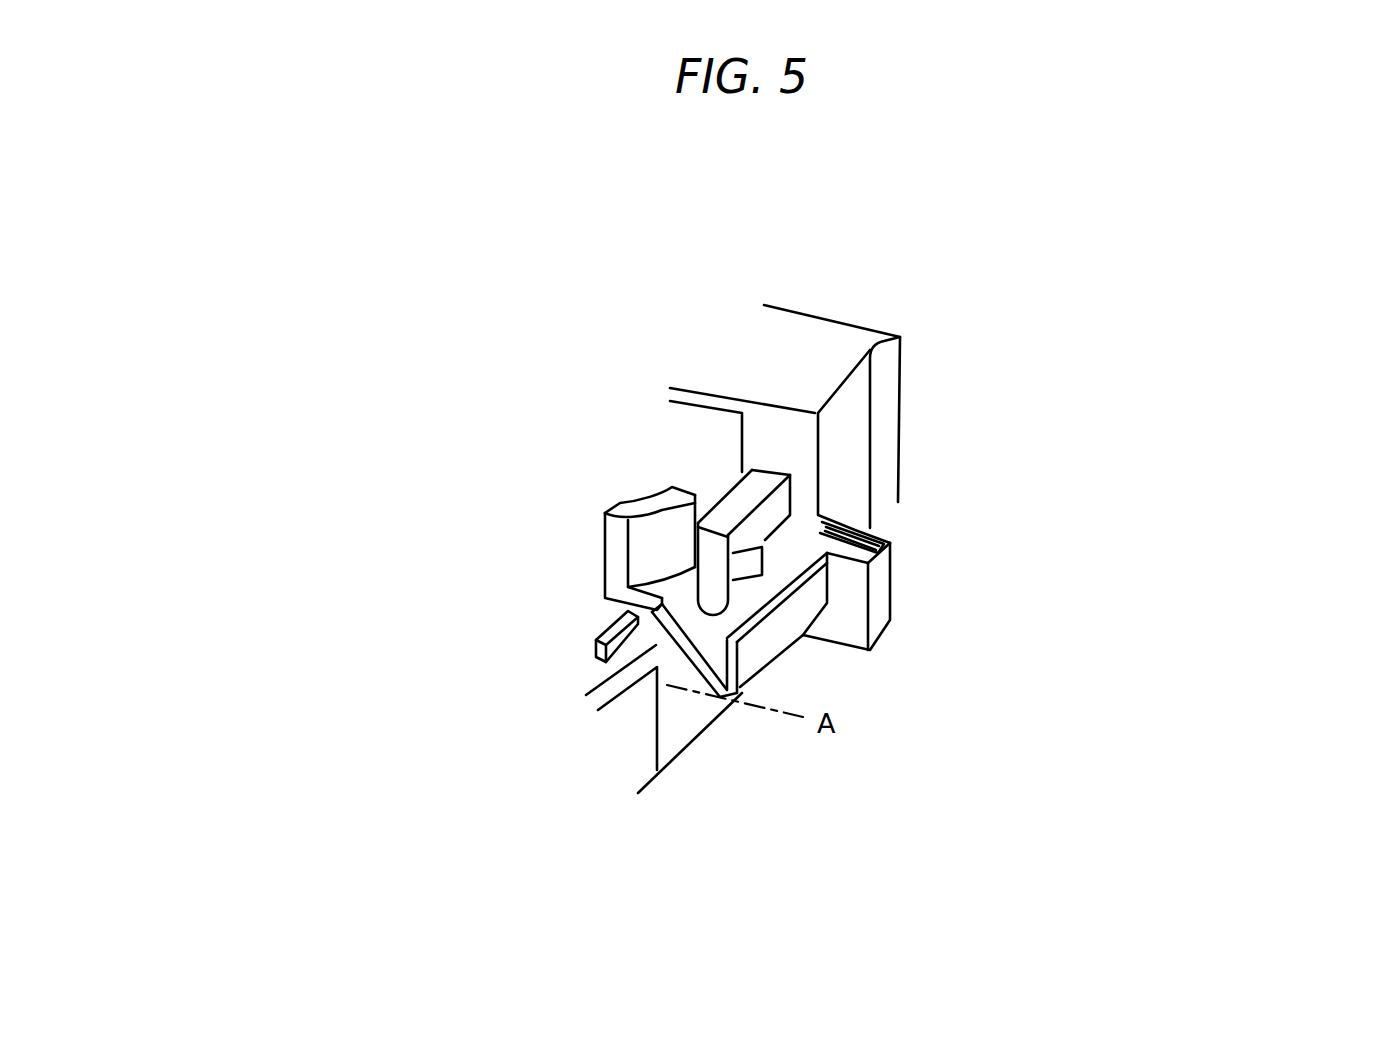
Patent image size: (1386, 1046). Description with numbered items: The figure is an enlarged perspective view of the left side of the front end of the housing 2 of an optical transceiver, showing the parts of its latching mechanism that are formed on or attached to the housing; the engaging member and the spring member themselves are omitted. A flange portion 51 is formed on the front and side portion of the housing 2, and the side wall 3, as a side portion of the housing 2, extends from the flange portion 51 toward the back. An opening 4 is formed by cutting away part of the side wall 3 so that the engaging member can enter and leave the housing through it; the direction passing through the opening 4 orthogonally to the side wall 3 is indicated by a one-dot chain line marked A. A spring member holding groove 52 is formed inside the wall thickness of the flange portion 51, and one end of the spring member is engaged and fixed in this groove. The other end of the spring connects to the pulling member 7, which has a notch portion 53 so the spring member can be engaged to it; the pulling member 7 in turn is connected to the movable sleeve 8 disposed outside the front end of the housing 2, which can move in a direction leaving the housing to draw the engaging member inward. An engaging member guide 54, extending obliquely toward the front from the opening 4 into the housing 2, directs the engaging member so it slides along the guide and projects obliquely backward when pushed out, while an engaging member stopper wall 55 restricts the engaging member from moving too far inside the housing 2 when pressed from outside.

The housing 2 is at (897, 688).
The side wall 3 is at (640, 760).
The opening 4 is at (687, 717).
The pulling member 7 is at (760, 477).
The movable sleeve 8 is at (843, 337).
The flange portion 51 is at (892, 568).
The spring member holding groove 52 is at (840, 530).
The notch portion 53 is at (755, 540).
The engaging member guide 54 is at (588, 694).
The engaging member stopper wall 55 is at (600, 625).